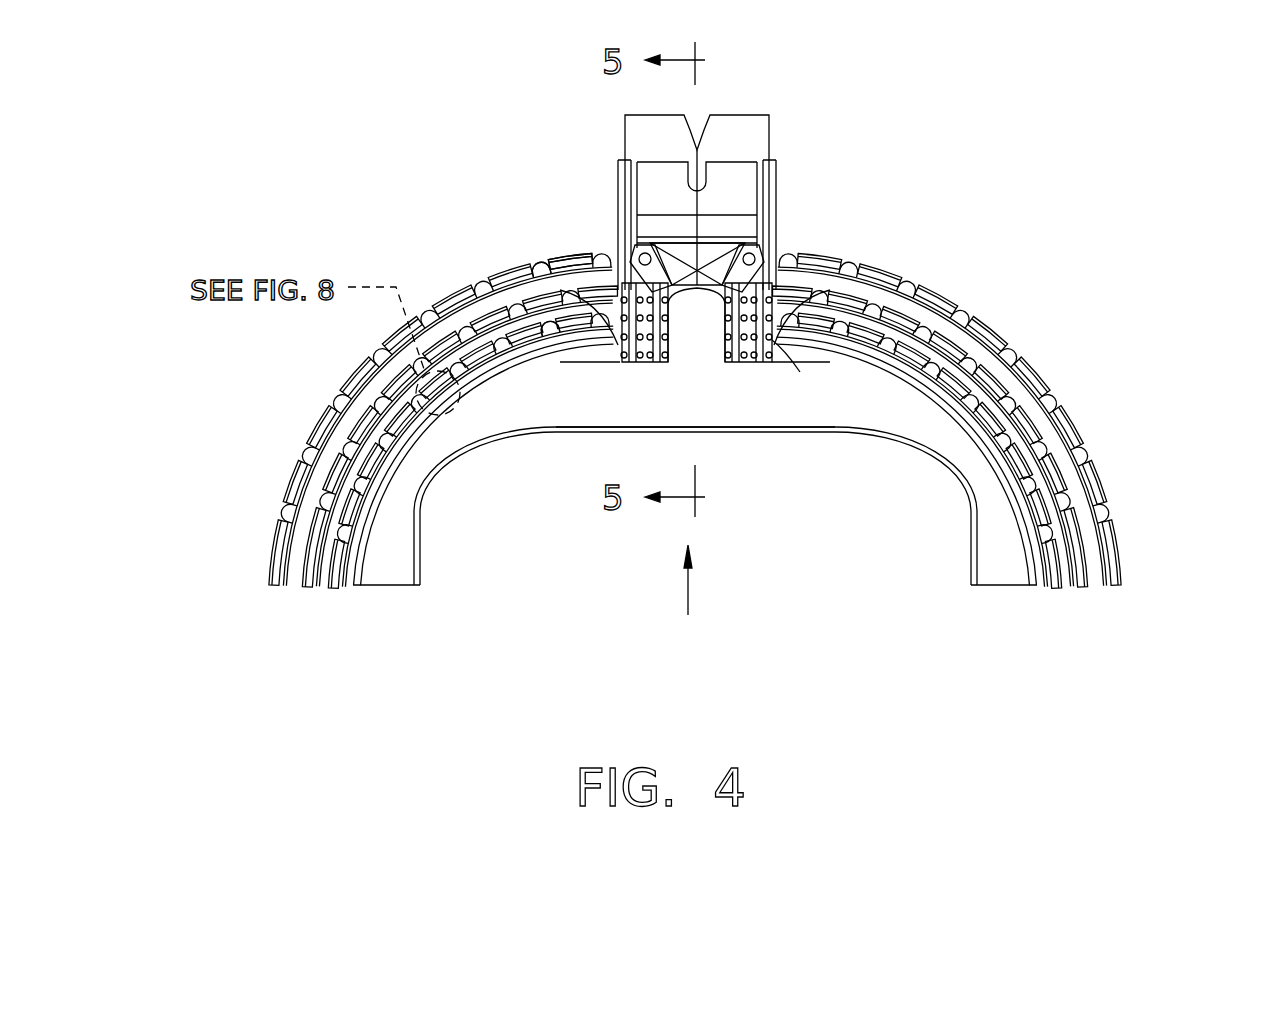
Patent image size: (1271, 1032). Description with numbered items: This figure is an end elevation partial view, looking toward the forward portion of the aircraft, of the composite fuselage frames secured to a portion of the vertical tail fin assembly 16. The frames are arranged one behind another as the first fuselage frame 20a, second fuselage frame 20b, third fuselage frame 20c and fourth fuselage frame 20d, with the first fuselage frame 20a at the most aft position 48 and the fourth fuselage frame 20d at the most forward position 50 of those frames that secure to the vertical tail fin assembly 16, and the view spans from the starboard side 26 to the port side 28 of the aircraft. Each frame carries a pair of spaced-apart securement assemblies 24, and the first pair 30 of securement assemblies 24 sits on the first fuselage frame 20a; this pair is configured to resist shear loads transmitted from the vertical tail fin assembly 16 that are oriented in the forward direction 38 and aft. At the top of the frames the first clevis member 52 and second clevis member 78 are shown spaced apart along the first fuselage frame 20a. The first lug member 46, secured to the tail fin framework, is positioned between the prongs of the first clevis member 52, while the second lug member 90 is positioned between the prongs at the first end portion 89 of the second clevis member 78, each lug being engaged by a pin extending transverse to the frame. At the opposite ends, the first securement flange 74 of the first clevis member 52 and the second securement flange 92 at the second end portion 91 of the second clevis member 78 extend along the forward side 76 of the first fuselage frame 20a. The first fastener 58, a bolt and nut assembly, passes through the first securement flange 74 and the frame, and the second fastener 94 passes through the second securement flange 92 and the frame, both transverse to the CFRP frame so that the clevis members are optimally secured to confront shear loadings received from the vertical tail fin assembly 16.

The vertical tail fin assembly 16 is at (782, 102).
The most forward position 50 is at (573, 136).
The second lug member 90 is at (617, 216).
The first lug member 46 is at (776, 215).
The first clevis member 52 is at (790, 250).
The second clevis member 78 is at (557, 252).
The first end portion 89 is at (548, 270).
The second end portion 91 is at (552, 330).
The securement assembly 24 is at (734, 439).
The starboard side 26 is at (1158, 406).
The port side 28 is at (208, 601).
The most aft position 48 is at (656, 628).
The second securement flange 92 is at (642, 363).
The second fastener 94 is at (663, 337).
The first securement flange 74 is at (780, 345).
The first fastener 58 is at (778, 372).
The first pair of securement assemblies 30 is at (714, 398).
The forward side 76 is at (373, 505).
The forward direction 38 is at (690, 600).
The first fuselage frame 20a is at (1015, 582).
The second fuselage frame 20b is at (1045, 553).
The third fuselage frame 20c is at (1068, 532).
The fourth fuselage frame 20d is at (1085, 500).